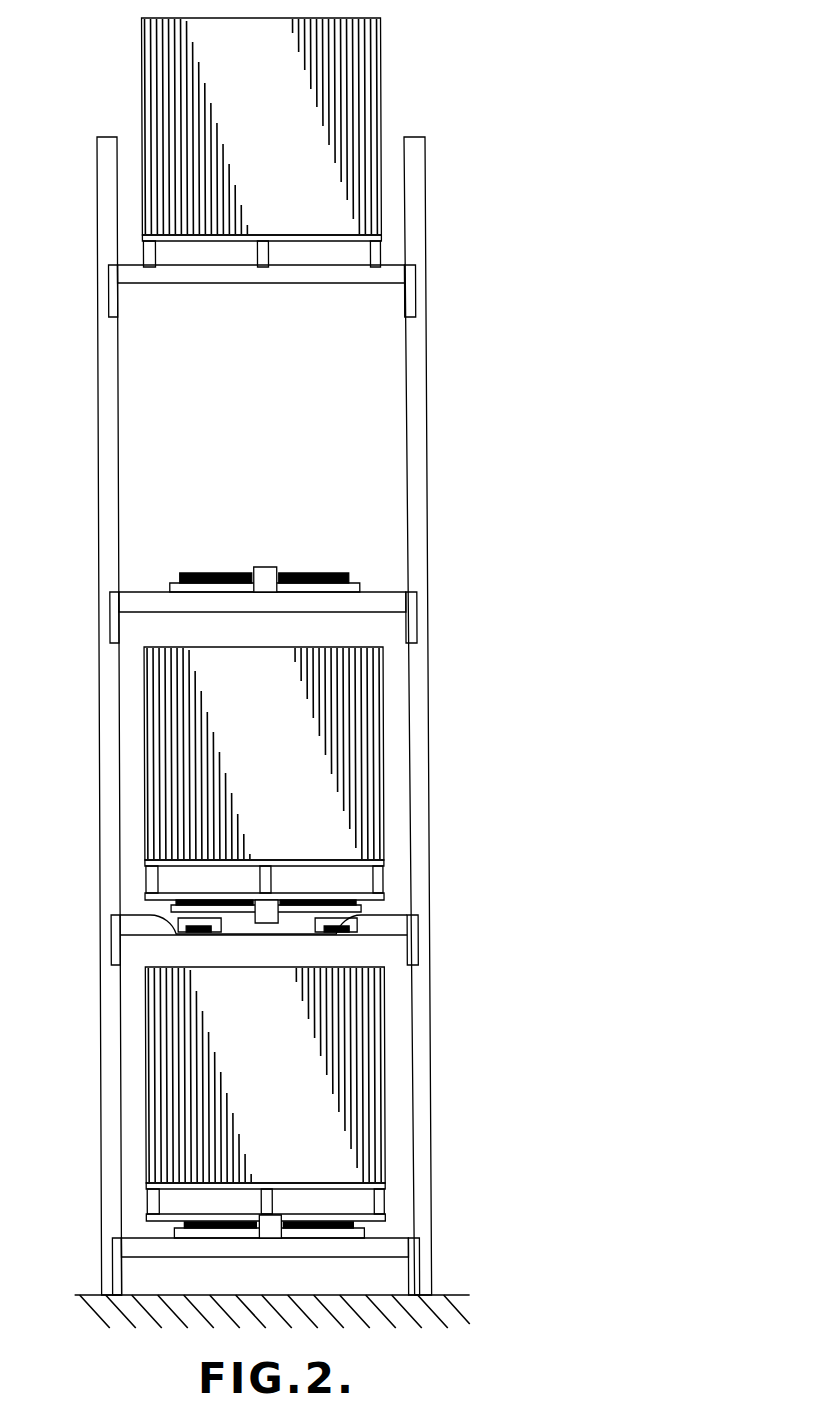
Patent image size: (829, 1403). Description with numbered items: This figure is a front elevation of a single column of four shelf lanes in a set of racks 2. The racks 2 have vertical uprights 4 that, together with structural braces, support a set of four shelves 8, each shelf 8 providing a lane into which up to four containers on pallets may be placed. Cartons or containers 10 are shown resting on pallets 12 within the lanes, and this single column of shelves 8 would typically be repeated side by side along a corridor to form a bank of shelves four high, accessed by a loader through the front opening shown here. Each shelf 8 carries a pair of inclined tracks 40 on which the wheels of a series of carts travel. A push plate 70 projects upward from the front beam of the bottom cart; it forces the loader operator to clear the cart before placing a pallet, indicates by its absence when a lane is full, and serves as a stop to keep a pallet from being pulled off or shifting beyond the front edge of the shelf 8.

The racks 2 is at (316, 732).
The vertical uprights 4 is at (118, 333).
The shelves 8 is at (371, 612).
The cartons or containers 10 is at (321, 142).
The pallets 12 is at (383, 253).
The inclined tracks 40 is at (193, 935).
The push plate 70 is at (261, 567).